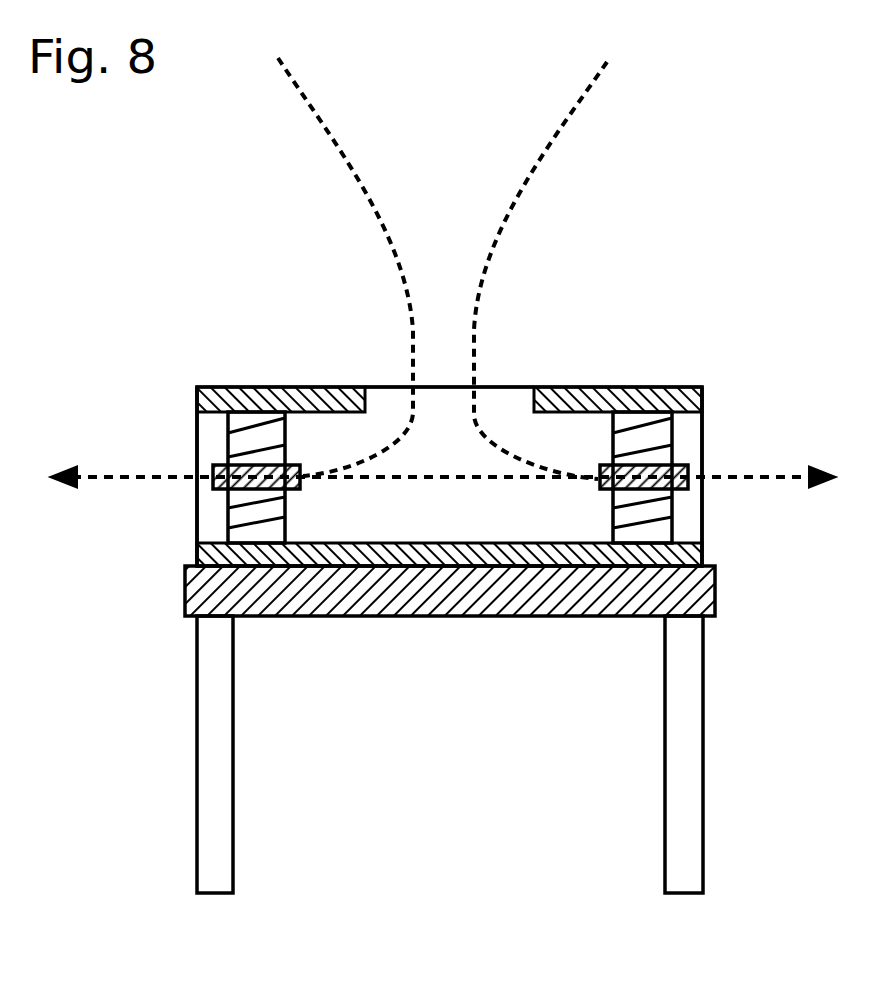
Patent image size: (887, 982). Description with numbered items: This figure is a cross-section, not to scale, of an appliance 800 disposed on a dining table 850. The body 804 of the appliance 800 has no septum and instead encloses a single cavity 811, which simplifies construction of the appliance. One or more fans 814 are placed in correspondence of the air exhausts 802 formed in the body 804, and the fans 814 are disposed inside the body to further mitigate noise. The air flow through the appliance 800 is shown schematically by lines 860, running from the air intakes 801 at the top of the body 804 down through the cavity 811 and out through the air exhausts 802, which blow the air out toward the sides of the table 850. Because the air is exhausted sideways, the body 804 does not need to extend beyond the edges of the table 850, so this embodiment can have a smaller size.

The appliance 800 is at (205, 369).
The air intakes 801 is at (303, 356).
The air exhausts 802 is at (192, 516).
The body 804 is at (630, 383).
The single cavity 811 is at (452, 454).
The fans 814 is at (592, 488).
The dining table 850 is at (464, 625).
The lines 860 is at (440, 252).